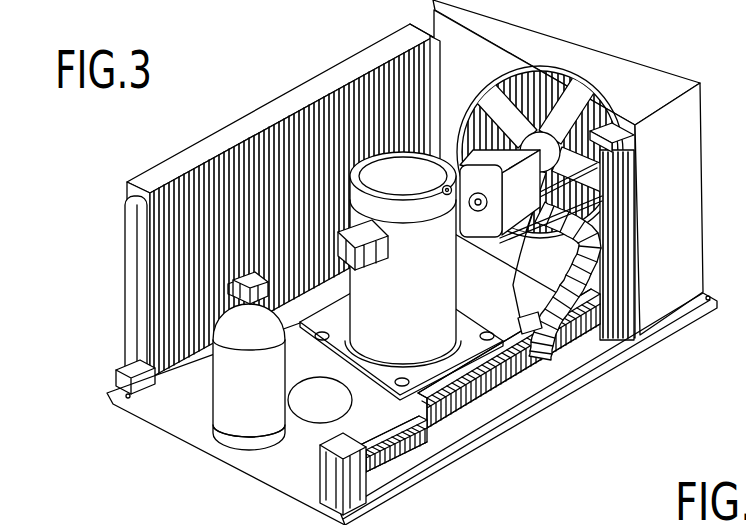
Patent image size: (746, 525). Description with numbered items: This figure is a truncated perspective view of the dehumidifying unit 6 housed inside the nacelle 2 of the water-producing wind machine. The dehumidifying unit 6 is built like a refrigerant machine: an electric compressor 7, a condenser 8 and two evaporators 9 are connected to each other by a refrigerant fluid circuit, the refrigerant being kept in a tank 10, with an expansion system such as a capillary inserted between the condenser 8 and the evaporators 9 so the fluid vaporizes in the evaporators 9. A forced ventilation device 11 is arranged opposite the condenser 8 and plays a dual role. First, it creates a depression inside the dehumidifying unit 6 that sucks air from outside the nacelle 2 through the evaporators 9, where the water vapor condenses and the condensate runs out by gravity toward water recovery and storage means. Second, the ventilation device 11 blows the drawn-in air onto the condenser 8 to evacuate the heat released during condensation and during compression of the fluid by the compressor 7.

The nacelle 2 is at (287, 467).
The dehumidifying unit 6 is at (307, 72).
The electric compressor 7 is at (417, 258).
The condenser 8 is at (563, 35).
The evaporators 9 is at (190, 160).
The tank 10 is at (233, 378).
The forced ventilation device 11 is at (520, 208).